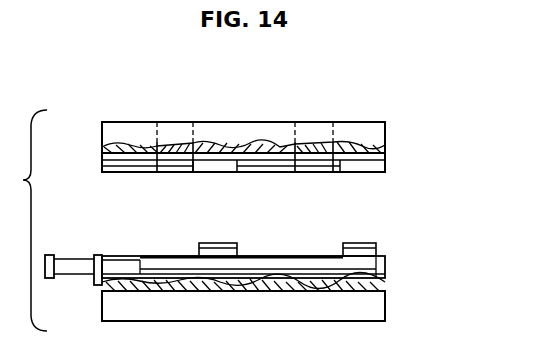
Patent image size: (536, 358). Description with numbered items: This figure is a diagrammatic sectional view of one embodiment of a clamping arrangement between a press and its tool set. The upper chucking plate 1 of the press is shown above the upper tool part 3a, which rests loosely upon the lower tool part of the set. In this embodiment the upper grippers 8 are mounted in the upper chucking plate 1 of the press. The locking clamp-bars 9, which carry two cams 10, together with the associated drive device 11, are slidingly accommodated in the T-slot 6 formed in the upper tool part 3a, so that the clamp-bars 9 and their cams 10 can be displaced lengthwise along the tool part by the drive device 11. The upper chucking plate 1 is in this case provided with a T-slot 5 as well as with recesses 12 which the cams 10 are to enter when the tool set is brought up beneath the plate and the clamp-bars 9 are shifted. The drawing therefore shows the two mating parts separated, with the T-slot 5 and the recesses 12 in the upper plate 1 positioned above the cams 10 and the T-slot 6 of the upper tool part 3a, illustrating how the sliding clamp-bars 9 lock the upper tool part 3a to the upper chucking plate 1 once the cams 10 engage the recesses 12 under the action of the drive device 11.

The upper chucking plate 1 is at (386, 147).
The upper grippers 8 is at (334, 125).
The T-slot 5 is at (135, 172).
The recesses 12 is at (370, 163).
The upper tool part 3a is at (378, 304).
The T-slot 6 is at (378, 275).
The locking clamp-bars 9 is at (291, 255).
The cams 10 is at (206, 243).
The drive device 11 is at (72, 262).